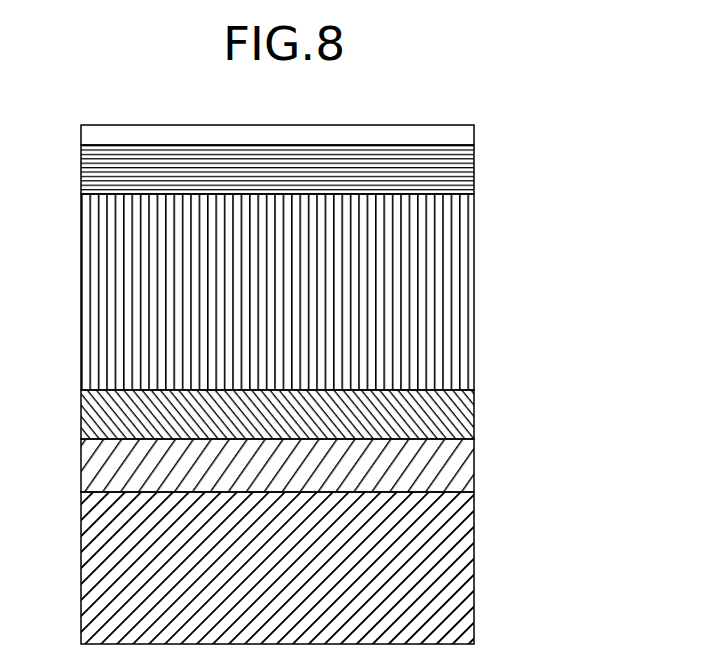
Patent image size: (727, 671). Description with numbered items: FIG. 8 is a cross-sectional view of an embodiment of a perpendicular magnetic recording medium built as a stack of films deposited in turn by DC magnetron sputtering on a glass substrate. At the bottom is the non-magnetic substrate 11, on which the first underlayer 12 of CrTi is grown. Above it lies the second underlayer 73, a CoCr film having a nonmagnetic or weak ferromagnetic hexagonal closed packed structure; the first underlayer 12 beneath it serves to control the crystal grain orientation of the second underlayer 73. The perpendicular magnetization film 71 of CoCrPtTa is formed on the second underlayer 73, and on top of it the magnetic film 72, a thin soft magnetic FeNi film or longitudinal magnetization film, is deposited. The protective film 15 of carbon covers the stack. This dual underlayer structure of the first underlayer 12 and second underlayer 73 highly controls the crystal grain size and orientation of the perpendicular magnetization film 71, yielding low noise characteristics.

The non-magnetic substrate 11 is at (463, 557).
The first underlayer 12 is at (463, 464).
The second underlayer 73 is at (463, 412).
The perpendicular magnetization film 71 is at (460, 277).
The magnetic film 72 is at (474, 165).
The protective film 15 is at (460, 135).